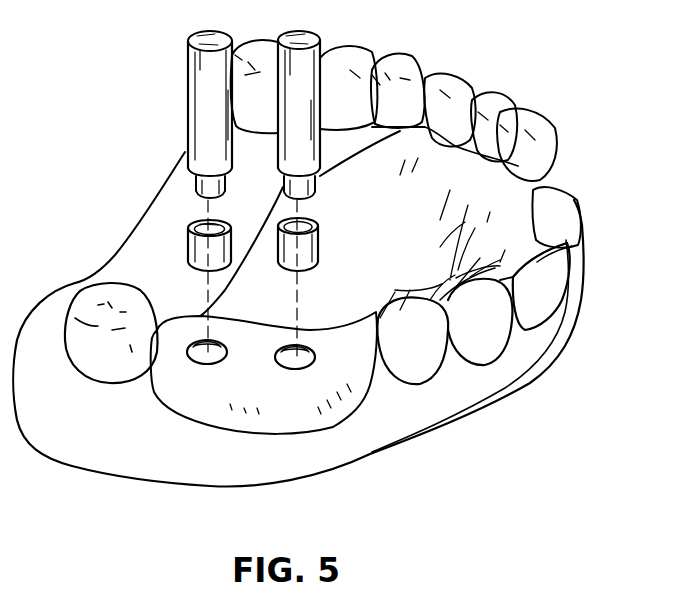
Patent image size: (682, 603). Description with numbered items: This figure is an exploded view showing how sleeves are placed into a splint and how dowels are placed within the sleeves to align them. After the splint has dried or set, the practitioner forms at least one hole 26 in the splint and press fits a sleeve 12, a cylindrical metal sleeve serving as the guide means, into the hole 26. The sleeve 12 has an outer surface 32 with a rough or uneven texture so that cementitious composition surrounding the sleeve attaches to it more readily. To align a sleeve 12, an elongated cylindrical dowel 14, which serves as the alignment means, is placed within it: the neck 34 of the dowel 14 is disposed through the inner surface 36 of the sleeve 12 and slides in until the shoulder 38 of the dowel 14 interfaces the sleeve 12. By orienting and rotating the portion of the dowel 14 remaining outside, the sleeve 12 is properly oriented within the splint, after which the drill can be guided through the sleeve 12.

The sleeve 12 is at (320, 240).
The dowel 14 is at (205, 90).
The hole 26 is at (316, 360).
The outer surface 32 is at (320, 224).
The neck 34 is at (320, 186).
The inner surface 36 is at (188, 232).
The shoulder 38 is at (194, 174).